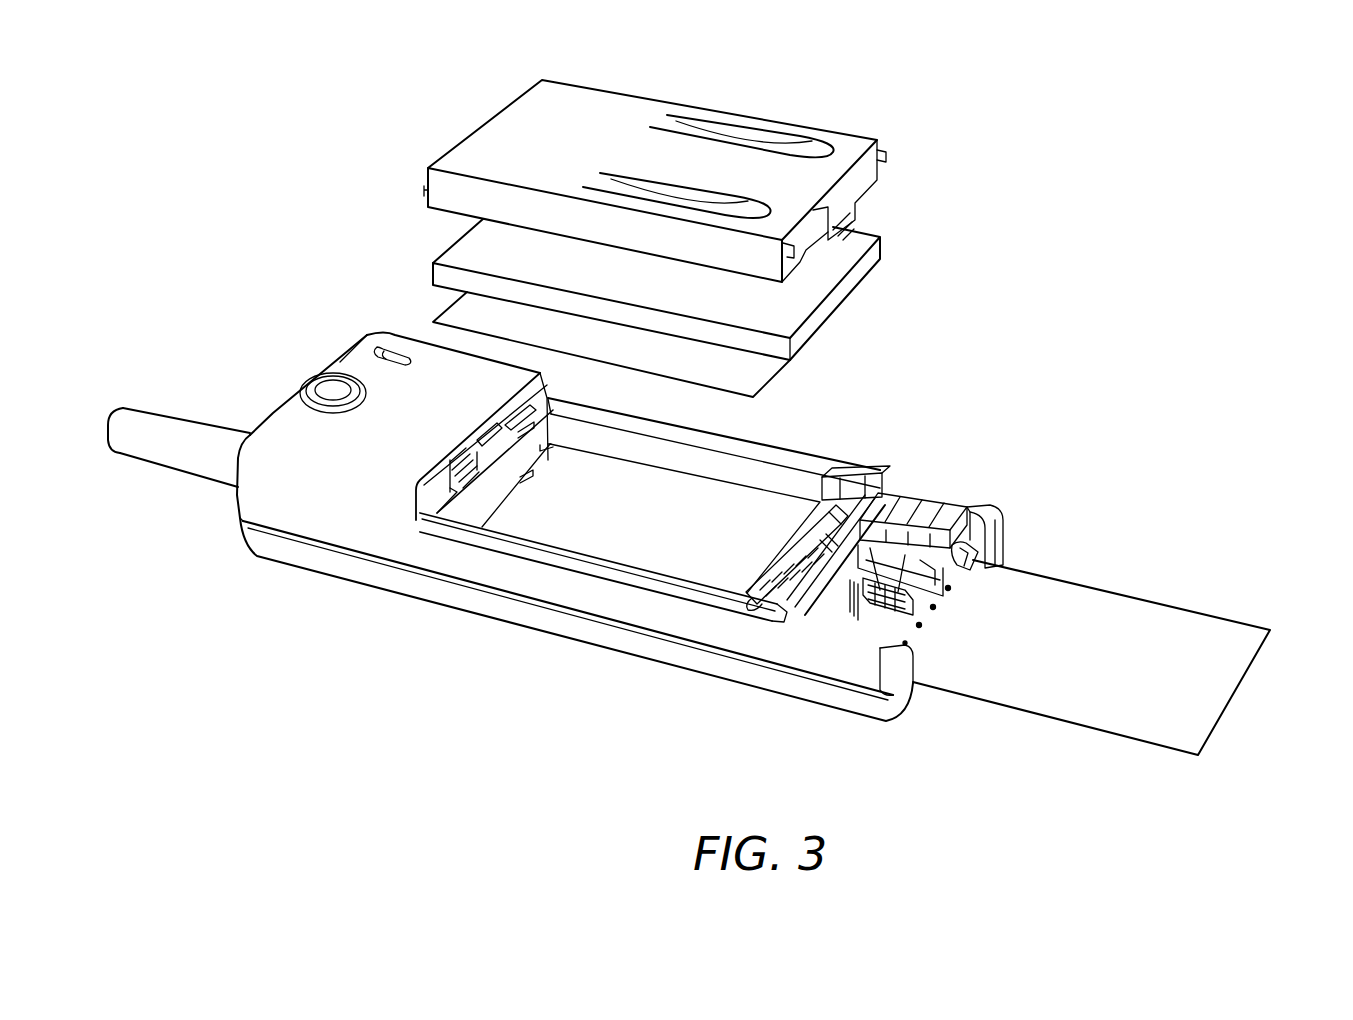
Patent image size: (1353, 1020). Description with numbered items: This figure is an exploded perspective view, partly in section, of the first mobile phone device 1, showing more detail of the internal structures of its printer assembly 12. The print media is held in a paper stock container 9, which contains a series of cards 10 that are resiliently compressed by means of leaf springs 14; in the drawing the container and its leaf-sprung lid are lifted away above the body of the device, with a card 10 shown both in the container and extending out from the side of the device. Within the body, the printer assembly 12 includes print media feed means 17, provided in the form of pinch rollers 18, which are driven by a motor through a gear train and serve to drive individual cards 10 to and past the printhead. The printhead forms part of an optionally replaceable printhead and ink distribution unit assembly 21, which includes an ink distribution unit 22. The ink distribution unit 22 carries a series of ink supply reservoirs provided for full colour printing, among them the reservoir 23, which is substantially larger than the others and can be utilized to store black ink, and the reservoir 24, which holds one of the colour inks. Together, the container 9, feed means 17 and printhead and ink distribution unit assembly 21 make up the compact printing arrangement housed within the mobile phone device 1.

The mobile phone device 1 is at (1223, 289).
The paper stock container 9 is at (970, 161).
The cards 10 is at (878, 255).
The printer assembly 12 is at (1055, 379).
The leaf springs 14 is at (690, 134).
The feed means 17 is at (842, 495).
The pinch rollers 18 is at (748, 587).
The printhead and ink distribution unit assembly 21 is at (892, 482).
The ink distribution unit 22 is at (928, 495).
The ink supply reservoir 23 is at (960, 503).
The ink supply reservoir 24 is at (988, 536).